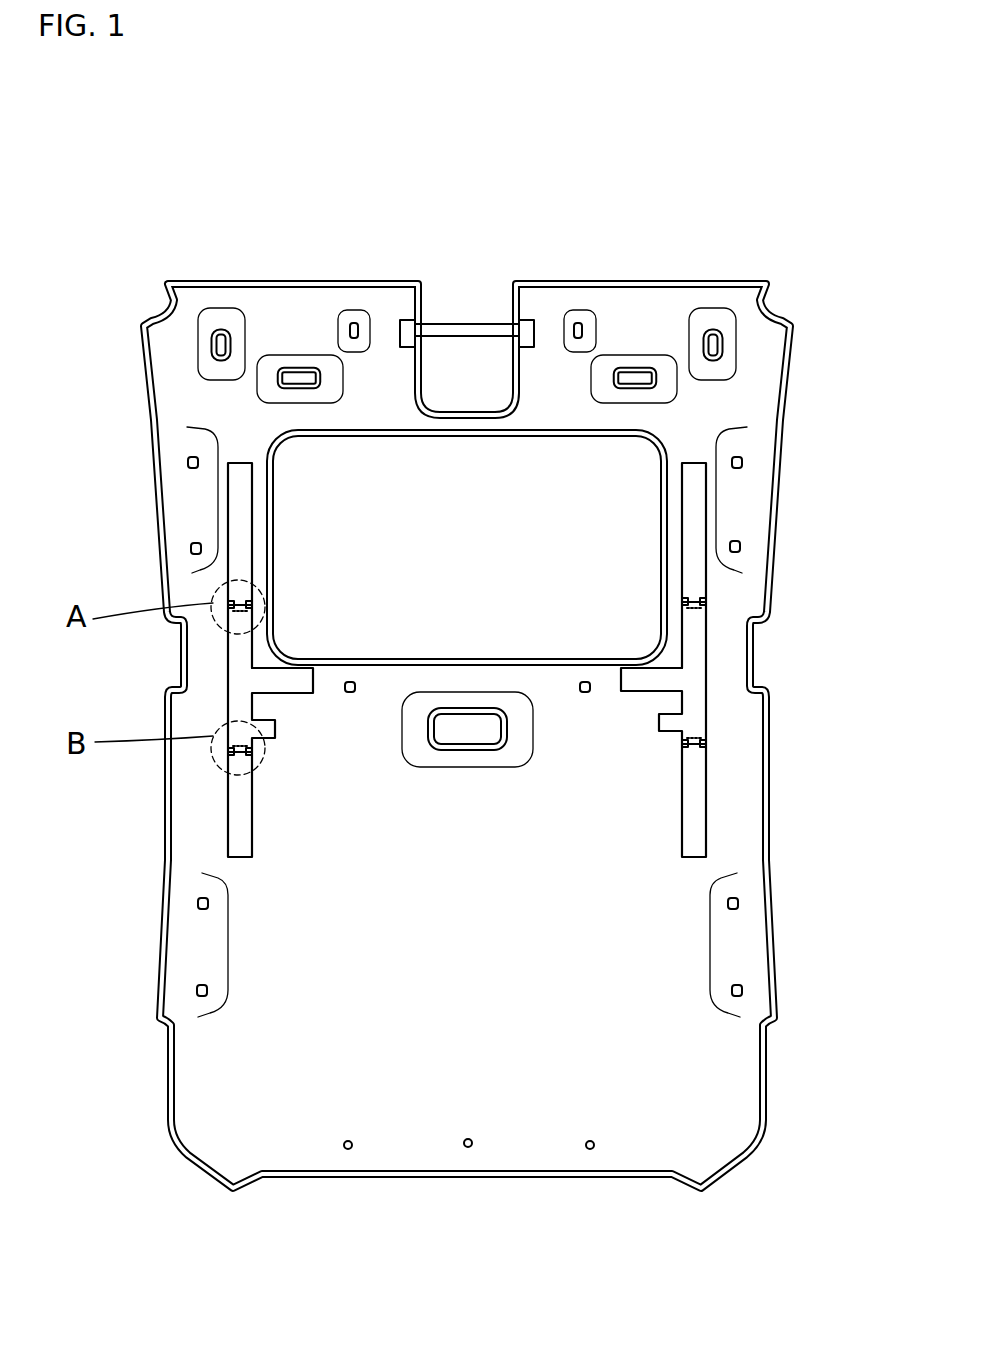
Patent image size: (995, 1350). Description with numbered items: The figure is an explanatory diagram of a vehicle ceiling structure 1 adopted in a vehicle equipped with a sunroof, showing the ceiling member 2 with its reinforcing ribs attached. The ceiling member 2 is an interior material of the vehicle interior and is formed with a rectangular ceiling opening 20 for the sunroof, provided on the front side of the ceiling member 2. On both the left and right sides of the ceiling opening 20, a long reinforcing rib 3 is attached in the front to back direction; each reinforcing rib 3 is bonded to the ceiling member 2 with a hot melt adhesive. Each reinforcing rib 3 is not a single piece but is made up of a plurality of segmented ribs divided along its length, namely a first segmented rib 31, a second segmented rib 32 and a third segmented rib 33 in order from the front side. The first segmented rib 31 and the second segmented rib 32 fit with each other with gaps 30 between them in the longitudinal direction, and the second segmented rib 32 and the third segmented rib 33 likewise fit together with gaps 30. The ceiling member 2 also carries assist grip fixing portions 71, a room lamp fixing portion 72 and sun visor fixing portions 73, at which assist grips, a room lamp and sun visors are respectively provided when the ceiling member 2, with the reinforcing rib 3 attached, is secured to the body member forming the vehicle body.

The vehicle ceiling structure 1 is at (683, 246).
The ceiling member 2 is at (299, 334).
The reinforcing rib 3 is at (468, 653).
The ceiling opening 20 is at (548, 485).
The gap 30 is at (228, 607).
The first segmented rib 31 is at (237, 525).
The second segmented rib 32 is at (235, 672).
The third segmented rib 33 is at (235, 813).
The assist grip fixing portion 71 is at (190, 461).
The room lamp fixing portion 72 is at (468, 725).
The sun visor fixing portion 73 is at (221, 335).